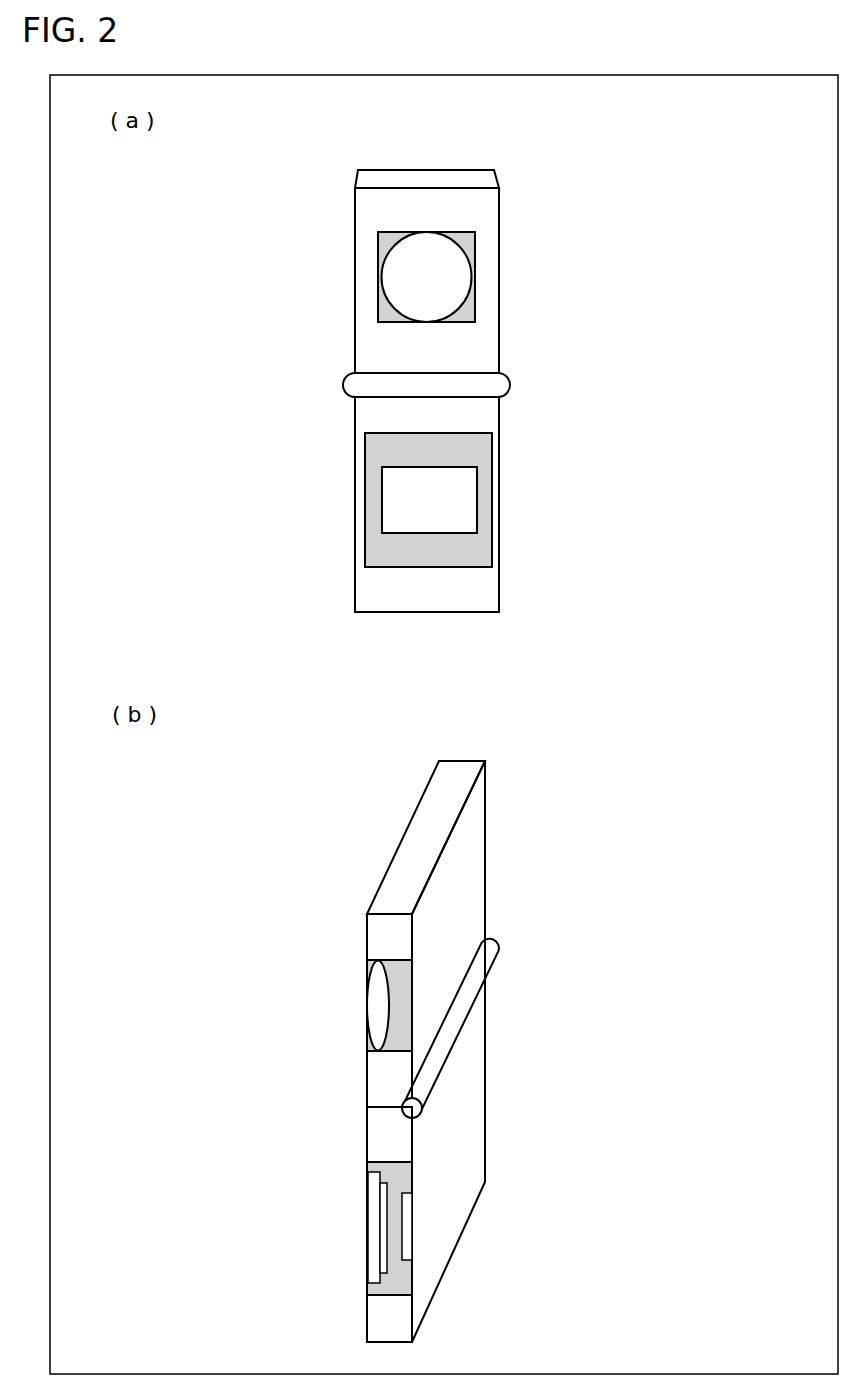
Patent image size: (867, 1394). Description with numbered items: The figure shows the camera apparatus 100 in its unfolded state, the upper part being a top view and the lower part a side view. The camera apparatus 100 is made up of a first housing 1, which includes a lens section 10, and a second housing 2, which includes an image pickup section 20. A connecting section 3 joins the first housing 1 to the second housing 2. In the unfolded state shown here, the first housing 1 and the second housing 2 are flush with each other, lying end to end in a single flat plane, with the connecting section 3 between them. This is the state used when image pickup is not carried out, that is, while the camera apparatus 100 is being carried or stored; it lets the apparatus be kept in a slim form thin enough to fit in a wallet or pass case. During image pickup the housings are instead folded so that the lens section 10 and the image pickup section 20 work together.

The camera apparatus 100 is at (550, 182).
The first housing 1 is at (355, 204).
The second housing 2 is at (355, 470).
The connecting section 3 is at (505, 384).
The lens section 10 is at (465, 312).
The image pickup section 20 is at (475, 549).